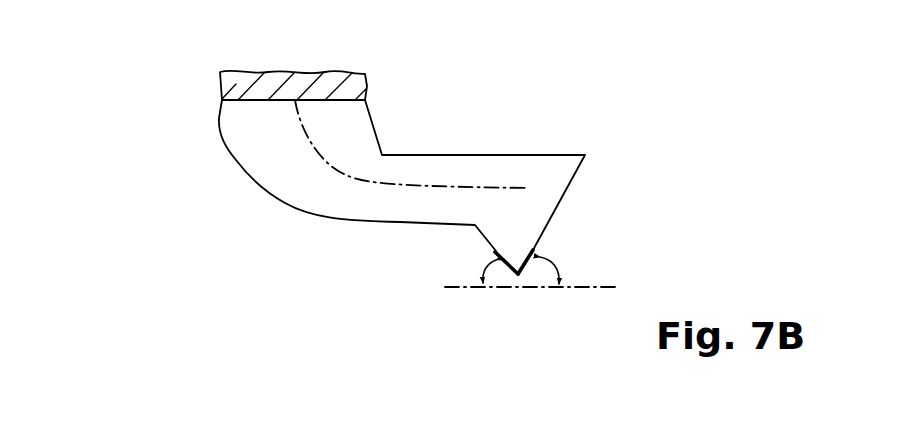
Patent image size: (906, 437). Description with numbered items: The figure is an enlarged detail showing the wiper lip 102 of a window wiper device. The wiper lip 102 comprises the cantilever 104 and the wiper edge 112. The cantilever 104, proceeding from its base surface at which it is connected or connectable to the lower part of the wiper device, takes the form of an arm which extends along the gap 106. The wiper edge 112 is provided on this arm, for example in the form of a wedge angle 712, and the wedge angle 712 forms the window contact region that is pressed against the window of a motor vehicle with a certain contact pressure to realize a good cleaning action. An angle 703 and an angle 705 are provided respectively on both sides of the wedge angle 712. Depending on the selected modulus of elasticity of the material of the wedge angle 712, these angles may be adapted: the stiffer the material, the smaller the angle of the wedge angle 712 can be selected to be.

The wiper lip 102 is at (183, 183).
The cantilever 104 is at (361, 126).
The gap 106 is at (519, 130).
The angle 703 is at (486, 262).
The angle 705 is at (553, 263).
The wedge angle 712 is at (508, 272).
The wiper edge 112 is at (534, 280).